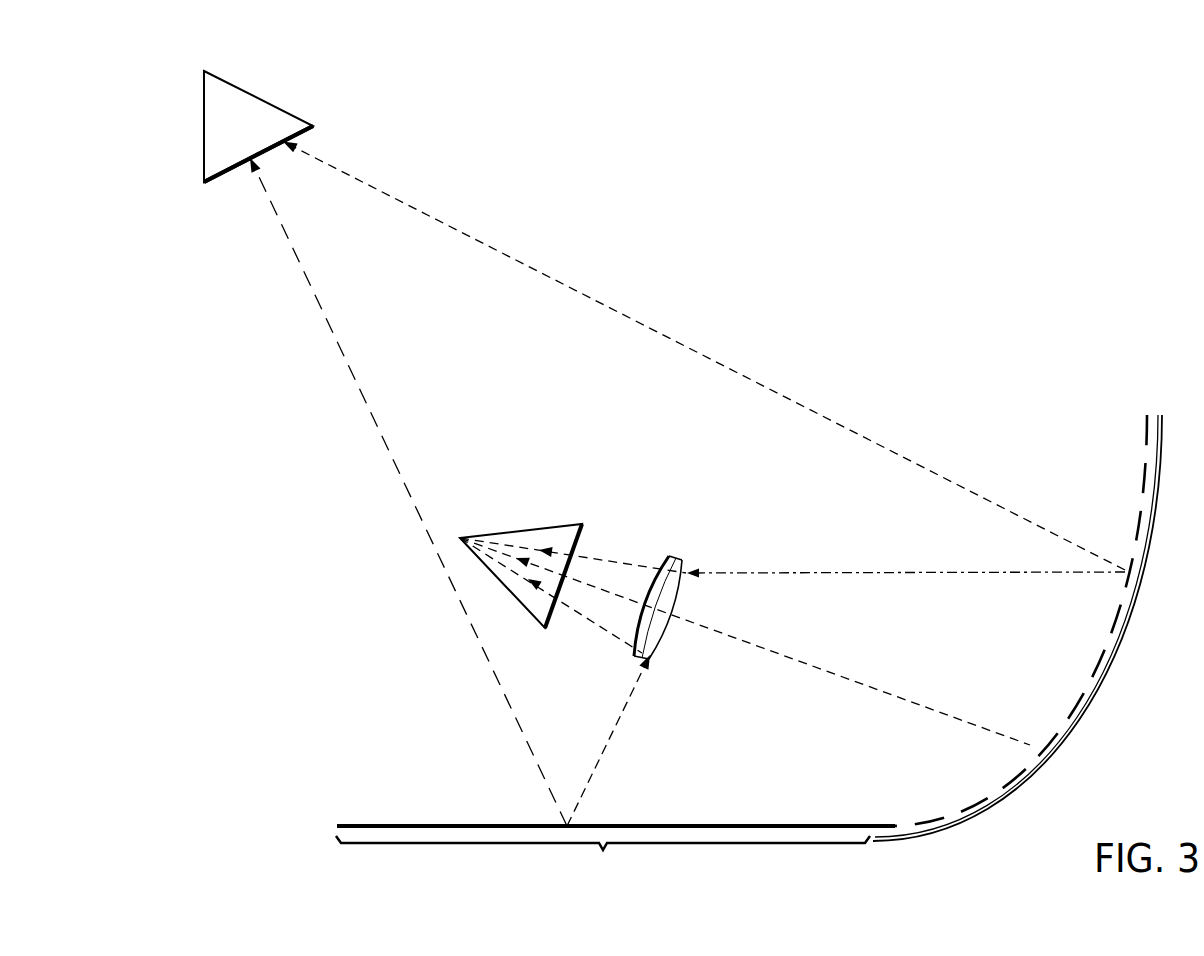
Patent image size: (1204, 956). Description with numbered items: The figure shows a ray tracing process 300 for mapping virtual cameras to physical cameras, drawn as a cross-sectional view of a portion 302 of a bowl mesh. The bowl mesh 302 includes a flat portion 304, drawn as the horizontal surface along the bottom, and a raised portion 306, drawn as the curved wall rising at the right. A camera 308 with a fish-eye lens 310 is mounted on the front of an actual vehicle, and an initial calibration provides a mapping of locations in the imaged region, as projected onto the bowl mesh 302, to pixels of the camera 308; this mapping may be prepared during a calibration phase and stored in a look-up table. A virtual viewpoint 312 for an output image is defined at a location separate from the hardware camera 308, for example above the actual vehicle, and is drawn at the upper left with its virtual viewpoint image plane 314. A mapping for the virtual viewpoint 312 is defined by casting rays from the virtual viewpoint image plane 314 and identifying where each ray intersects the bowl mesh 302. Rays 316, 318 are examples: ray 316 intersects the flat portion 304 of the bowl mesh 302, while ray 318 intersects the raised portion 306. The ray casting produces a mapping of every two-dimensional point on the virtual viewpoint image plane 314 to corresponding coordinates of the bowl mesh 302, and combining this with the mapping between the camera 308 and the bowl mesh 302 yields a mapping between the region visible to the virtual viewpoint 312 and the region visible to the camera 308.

The ray tracing process 300 is at (878, 72).
The bowl mesh portion 302 is at (460, 822).
The flat portion 304 is at (603, 862).
The raised portion 306 is at (1103, 683).
The camera 308 is at (495, 575).
The fish-eye lens 310 is at (664, 636).
The virtual viewpoint 312 is at (257, 97).
The virtual viewpoint image plane 314 is at (320, 135).
The ray 316 is at (360, 395).
The ray 318 is at (711, 360).